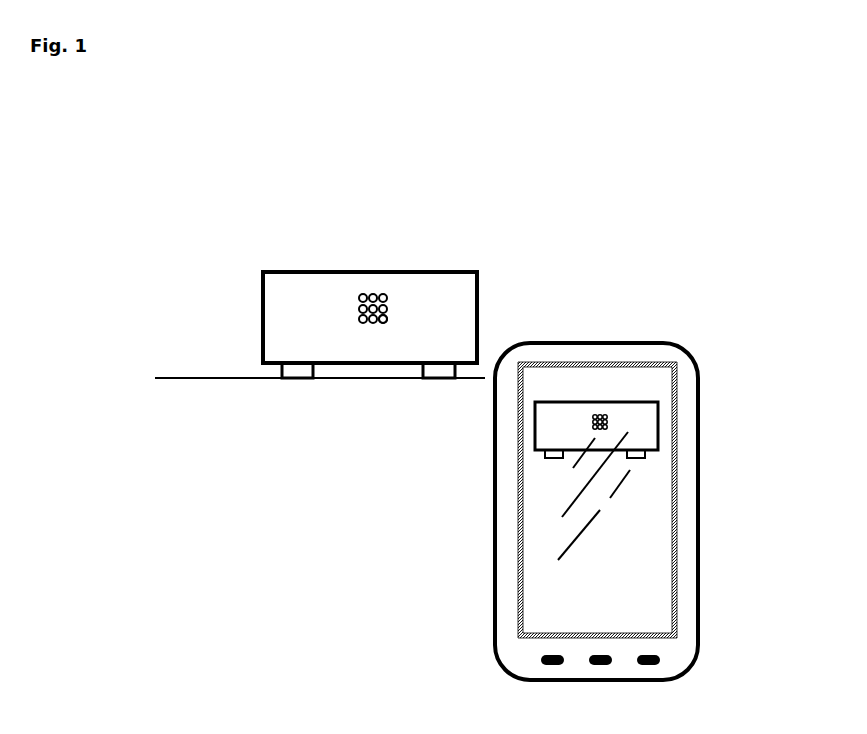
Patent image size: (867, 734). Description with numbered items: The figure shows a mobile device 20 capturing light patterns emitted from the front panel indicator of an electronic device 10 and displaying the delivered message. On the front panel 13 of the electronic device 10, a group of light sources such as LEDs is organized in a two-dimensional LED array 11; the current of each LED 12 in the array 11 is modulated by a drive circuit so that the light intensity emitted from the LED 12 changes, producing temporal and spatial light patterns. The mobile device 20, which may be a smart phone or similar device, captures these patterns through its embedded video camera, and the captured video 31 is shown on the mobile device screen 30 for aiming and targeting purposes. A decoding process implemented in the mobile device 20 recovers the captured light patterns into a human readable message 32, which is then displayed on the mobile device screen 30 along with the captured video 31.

The electronic device 10 is at (333, 262).
The LED array 11 is at (384, 283).
The LED 12 is at (387, 320).
The front panel 13 is at (283, 305).
The mobile device 20 is at (476, 525).
The mobile device screen 30 is at (602, 360).
The captured video 31 is at (668, 402).
The human readable message 32 is at (658, 522).